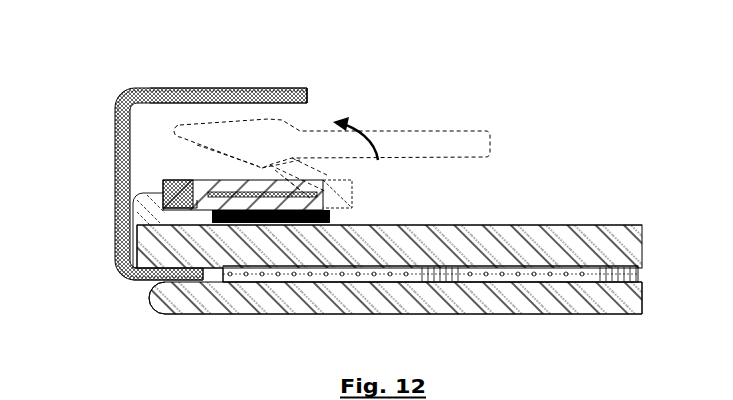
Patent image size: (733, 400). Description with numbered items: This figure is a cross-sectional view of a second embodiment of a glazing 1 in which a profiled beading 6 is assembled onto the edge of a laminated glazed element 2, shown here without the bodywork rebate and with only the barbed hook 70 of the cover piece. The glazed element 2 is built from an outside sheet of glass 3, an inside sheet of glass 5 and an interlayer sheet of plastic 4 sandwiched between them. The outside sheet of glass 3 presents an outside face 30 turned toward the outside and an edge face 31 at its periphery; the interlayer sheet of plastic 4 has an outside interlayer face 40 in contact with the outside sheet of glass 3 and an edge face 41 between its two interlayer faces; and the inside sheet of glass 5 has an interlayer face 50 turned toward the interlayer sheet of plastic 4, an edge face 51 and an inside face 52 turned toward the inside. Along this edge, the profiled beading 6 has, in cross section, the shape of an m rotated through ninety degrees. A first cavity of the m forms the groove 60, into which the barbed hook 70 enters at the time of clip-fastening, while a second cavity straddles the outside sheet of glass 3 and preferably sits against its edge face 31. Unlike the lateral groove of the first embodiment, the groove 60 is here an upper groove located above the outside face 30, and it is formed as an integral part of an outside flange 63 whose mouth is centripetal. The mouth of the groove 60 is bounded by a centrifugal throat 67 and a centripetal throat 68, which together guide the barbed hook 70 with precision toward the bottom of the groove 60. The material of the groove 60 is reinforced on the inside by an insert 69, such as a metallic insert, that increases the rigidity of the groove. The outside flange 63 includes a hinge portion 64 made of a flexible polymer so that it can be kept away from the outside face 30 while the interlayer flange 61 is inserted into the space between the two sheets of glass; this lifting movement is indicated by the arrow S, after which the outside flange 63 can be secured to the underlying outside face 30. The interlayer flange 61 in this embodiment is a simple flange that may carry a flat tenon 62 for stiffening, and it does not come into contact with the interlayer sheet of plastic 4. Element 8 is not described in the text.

The glazing 1 is at (351, 186).
The laminated glazed element 2 is at (373, 231).
The outside sheet of glass 3 is at (373, 200).
The interlayer sheet of plastic 4 is at (364, 313).
The inside sheet of glass 5 is at (597, 305).
The profiled beading 6 is at (183, 197).
The connector / circuit portion 8 is at (327, 207).
The outside face 30 is at (590, 227).
The edge face 31 is at (137, 243).
The outside interlayer face 40 is at (430, 221).
The edge face 41 is at (420, 313).
The interlayer face 50 is at (432, 322).
The edge face 51 is at (135, 296).
The inside face 52 is at (510, 313).
The groove 60 is at (153, 127).
The interlayer flange 61 is at (212, 273).
The flat tenon 62 is at (163, 270).
The outside flange 63 is at (197, 205).
The hinge portion 64 is at (173, 203).
The centrifugal throat 67 is at (307, 100).
The centripetal throat 68 is at (340, 197).
The insert 69 is at (243, 97).
The barbed hook 70 is at (427, 135).
The arrow S is at (365, 130).